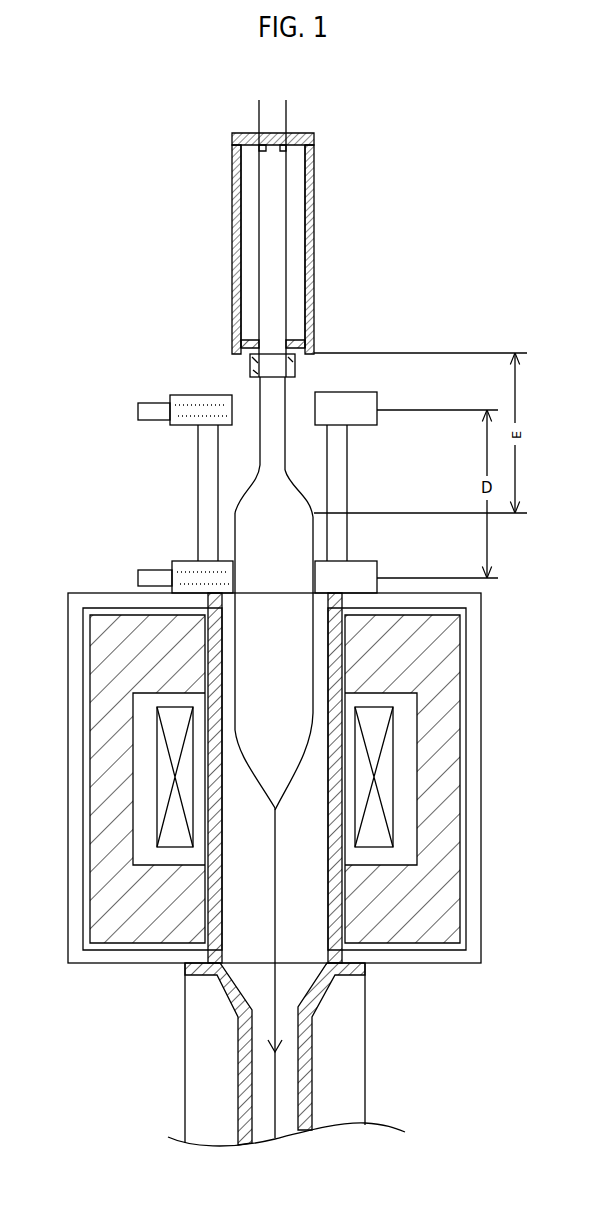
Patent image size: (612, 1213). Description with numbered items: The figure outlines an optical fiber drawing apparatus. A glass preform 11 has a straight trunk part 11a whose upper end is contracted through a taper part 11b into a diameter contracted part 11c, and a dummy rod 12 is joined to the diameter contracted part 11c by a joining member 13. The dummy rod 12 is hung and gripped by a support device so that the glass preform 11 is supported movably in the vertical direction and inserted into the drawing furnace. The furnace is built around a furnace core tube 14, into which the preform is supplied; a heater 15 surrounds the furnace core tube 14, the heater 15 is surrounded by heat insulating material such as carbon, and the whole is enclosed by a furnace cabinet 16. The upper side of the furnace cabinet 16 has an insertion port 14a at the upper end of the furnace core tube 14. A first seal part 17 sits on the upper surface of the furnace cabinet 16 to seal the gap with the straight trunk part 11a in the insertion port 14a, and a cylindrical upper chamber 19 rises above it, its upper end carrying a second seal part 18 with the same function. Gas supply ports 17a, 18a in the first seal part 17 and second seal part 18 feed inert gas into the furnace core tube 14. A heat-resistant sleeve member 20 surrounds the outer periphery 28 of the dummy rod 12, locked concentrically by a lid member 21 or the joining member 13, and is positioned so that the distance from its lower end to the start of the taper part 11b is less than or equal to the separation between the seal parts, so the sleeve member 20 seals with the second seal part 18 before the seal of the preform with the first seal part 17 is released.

The glass preform 11 is at (333, 757).
The straight trunk part 11a is at (314, 541).
The taper part 11b is at (240, 492).
The diameter contracted part 11c is at (288, 440).
The dummy rod 12 is at (279, 222).
The joining member 13 is at (255, 366).
The furnace core tube 14 is at (200, 660).
The insertion port 14a is at (227, 603).
The heater 15 is at (380, 767).
The furnace cabinet 16 is at (472, 847).
The first seal part 17 is at (377, 572).
The gas supply port 17a is at (138, 571).
The second seal part 18 is at (377, 400).
The gas supply port 18a is at (138, 412).
The upper chamber 19 is at (202, 513).
The sleeve member 20 is at (233, 256).
The lid member 21 is at (243, 133).
The outer periphery 28 is at (291, 296).